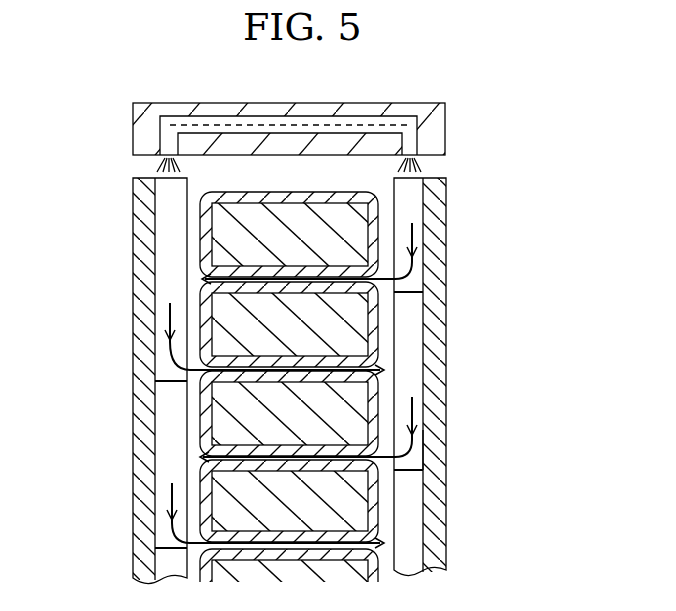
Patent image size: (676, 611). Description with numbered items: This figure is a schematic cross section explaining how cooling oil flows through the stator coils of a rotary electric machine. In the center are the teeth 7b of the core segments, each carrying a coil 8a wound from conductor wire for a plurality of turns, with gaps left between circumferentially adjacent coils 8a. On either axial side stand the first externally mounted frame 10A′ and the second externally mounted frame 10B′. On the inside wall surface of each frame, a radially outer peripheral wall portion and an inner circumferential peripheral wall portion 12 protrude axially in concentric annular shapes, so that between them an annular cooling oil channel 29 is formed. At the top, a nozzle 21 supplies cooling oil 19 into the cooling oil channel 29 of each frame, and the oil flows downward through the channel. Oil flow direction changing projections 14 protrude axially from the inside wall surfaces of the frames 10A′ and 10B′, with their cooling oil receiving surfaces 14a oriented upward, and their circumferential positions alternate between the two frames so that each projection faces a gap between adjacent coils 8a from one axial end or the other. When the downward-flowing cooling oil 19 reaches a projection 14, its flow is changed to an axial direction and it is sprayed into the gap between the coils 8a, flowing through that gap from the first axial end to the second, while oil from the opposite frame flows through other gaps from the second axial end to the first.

The nozzle 21 is at (158, 145).
The second externally mounted frame 10B′ is at (133, 208).
The first externally mounted frame 10A′ is at (454, 210).
The inner circumferential peripheral wall portion 12 is at (168, 447).
The oil flow direction changing projection 14 is at (175, 382).
The cooling oil receiving surface 14a is at (430, 442).
The cooling oil 19 is at (413, 247).
The cooling oil channel 29 is at (415, 377).
The tooth 7b is at (357, 314).
The coil 8a is at (378, 343).